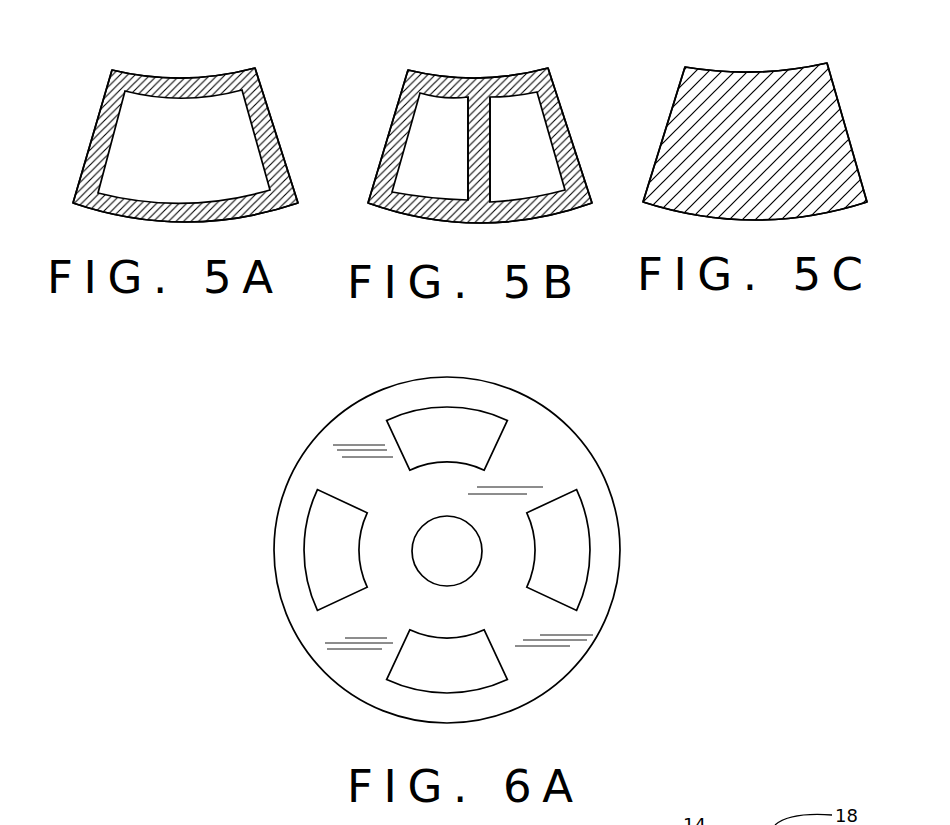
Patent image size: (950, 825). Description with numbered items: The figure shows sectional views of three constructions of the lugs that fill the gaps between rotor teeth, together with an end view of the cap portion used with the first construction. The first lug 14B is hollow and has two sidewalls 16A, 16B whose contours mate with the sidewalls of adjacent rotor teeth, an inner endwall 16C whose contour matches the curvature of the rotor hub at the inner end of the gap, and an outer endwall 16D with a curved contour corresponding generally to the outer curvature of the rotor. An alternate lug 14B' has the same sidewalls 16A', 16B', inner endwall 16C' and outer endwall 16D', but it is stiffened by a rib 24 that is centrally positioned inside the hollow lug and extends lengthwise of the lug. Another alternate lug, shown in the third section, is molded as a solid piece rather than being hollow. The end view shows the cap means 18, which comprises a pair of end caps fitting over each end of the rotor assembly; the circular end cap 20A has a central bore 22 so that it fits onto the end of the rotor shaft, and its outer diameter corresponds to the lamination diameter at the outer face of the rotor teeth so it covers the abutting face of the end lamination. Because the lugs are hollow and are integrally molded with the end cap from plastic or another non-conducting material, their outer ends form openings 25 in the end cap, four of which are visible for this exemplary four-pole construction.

In FIG. 5A, the lug 14B is at (185, 118).
In FIG. 5A, the sidewall 16A is at (73, 136).
In FIG. 5A, the sidewall 16B is at (288, 129).
In FIG. 5A, the inner endwall 16C is at (183, 50).
In FIG. 5A, the outer endwall 16D is at (168, 222).
In FIG. 5B, the lug 14B' is at (480, 118).
In FIG. 5B, the sidewall 16A' is at (373, 136).
In FIG. 5B, the sidewall 16B' is at (583, 135).
In FIG. 5B, the inner endwall 16C' is at (478, 49).
In FIG. 5B, the outer endwall 16D' is at (464, 223).
In FIG. 5B, the rib 24 is at (468, 163).
In FIG. 6A, the cap means 18 is at (312, 685).
In FIG. 6A, the end cap 20A is at (506, 615).
In FIG. 6A, the central bore 22 is at (422, 575).
In FIG. 6A, the opening 25 is at (333, 497).